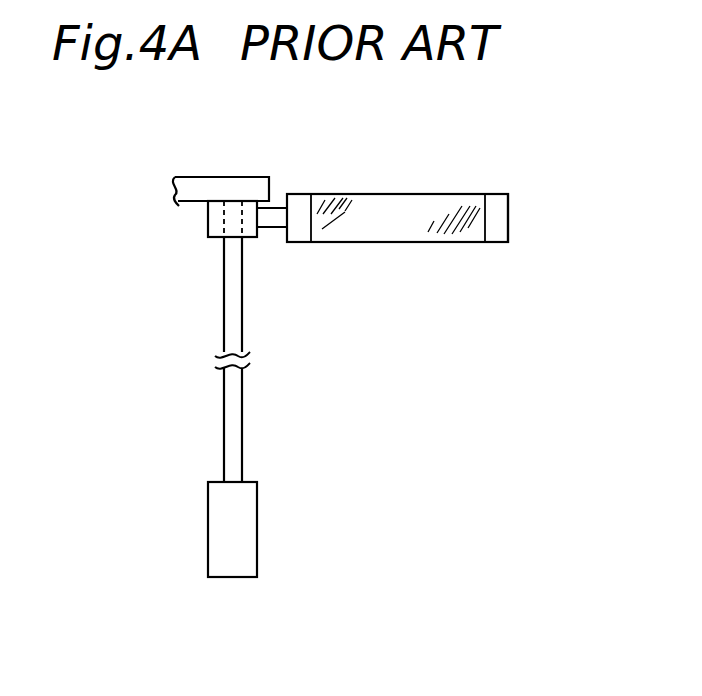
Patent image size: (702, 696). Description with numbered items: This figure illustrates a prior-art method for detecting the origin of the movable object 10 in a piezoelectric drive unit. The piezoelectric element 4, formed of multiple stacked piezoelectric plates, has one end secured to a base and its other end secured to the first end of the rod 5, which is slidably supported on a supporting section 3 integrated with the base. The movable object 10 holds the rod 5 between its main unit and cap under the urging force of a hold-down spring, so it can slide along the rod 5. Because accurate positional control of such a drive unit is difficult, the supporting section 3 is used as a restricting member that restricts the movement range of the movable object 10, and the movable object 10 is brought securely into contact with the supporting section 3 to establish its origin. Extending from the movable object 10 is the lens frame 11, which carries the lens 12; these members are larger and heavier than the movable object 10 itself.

The supporting section 3 is at (197, 182).
The movable object 10 is at (249, 236).
The lens 12 is at (429, 193).
The lens frame 11 is at (500, 197).
The rod 5 is at (238, 418).
The piezoelectric element 4 is at (245, 553).